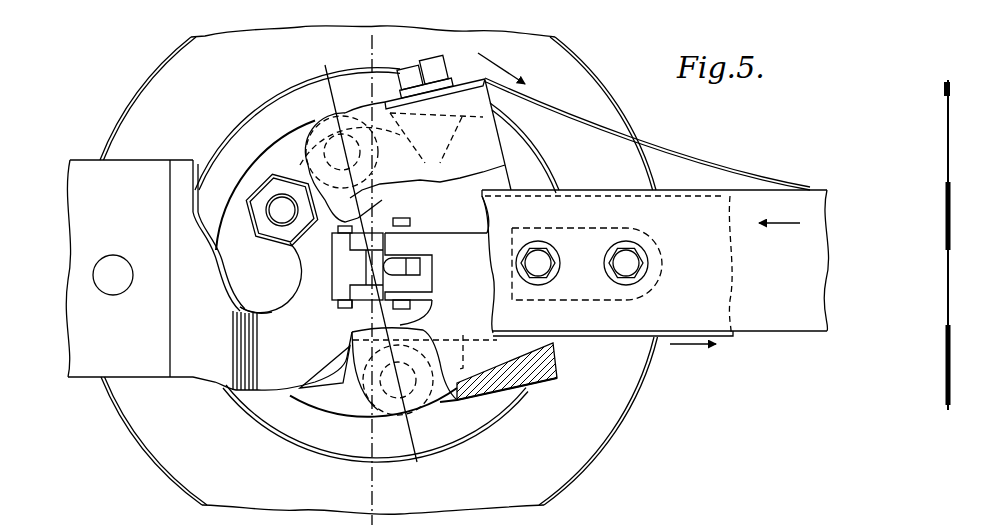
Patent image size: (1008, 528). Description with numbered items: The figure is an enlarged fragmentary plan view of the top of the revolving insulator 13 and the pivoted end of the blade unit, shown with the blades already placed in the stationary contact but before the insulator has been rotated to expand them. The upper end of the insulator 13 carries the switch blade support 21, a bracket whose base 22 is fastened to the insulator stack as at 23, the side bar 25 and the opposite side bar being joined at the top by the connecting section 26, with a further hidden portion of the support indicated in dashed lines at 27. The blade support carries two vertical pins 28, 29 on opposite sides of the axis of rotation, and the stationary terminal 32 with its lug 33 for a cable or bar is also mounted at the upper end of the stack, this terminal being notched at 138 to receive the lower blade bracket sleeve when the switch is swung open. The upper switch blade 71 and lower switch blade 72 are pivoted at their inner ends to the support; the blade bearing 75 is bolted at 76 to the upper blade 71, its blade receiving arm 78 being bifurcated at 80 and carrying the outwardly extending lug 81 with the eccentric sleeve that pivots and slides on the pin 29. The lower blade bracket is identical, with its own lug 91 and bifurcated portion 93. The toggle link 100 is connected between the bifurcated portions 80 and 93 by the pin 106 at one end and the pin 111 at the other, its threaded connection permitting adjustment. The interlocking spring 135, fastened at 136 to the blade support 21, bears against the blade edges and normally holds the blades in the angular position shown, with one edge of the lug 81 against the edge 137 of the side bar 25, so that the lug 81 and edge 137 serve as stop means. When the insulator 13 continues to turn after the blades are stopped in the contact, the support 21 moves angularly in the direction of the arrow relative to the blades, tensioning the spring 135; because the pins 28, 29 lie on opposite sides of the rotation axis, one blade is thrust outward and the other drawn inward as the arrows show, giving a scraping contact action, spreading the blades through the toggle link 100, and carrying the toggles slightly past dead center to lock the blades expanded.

The revolving insulator 13 is at (140, 473).
The switch blade support 21 is at (510, 139).
The base 22 is at (280, 157).
The fastening 23 is at (262, 197).
The side bar 25 is at (531, 381).
The connecting section 26 is at (497, 157).
The lever 27 is at (459, 122).
The vertical pin 28 is at (323, 128).
The vertical pin 29 is at (366, 414).
The stationary terminal 32 is at (200, 387).
The lug 33 is at (87, 168).
The upper switch blade 71 is at (790, 330).
The lower switch blade 72 is at (727, 341).
The blade bearing 75 is at (485, 306).
The bolts 76 is at (548, 249).
The blade receiving arm 78 is at (604, 299).
The bifurcated rear end 80 is at (423, 266).
The outwardly extending lug 81 is at (493, 389).
The lug 91 is at (456, 213).
The bifurcated portion 93 is at (336, 277).
The toggle link 100 is at (365, 280).
The pin 106 is at (350, 309).
The pin 111 is at (411, 221).
The interlocking spring 135 is at (683, 153).
The fastening 136 is at (420, 75).
The edge 137 is at (469, 343).
The notch 138 is at (272, 312).